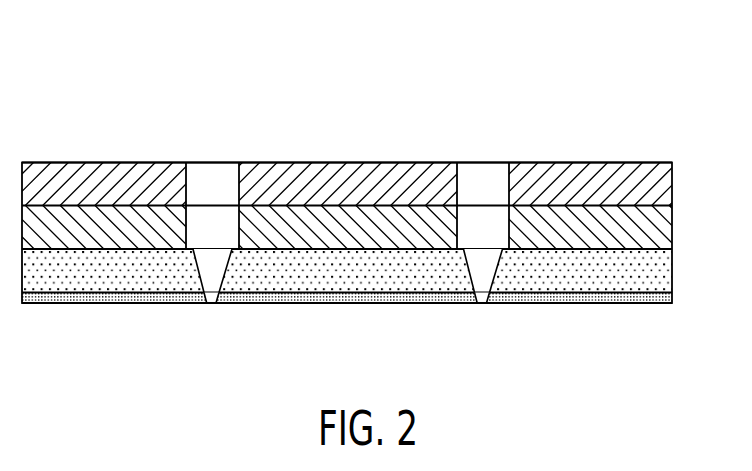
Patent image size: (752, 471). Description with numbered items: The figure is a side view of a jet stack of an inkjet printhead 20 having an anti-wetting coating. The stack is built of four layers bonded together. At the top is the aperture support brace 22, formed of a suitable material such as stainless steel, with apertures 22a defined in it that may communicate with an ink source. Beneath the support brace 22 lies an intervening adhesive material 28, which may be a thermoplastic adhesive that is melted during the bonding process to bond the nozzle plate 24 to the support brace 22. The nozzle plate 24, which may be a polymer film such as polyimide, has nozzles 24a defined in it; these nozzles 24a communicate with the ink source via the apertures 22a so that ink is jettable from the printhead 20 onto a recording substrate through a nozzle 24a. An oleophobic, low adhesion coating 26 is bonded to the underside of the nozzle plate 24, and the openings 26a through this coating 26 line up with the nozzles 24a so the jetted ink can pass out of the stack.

The printhead 20 is at (633, 108).
The aperture support brace 22 is at (662, 185).
The apertures 22a is at (483, 185).
The adhesive material 28 is at (660, 229).
The nozzle plate 24 is at (660, 273).
The nozzles 24a is at (478, 270).
The oleophobic low adhesion coating 26 is at (660, 298).
The via opening in bottom layer 26a is at (485, 303).